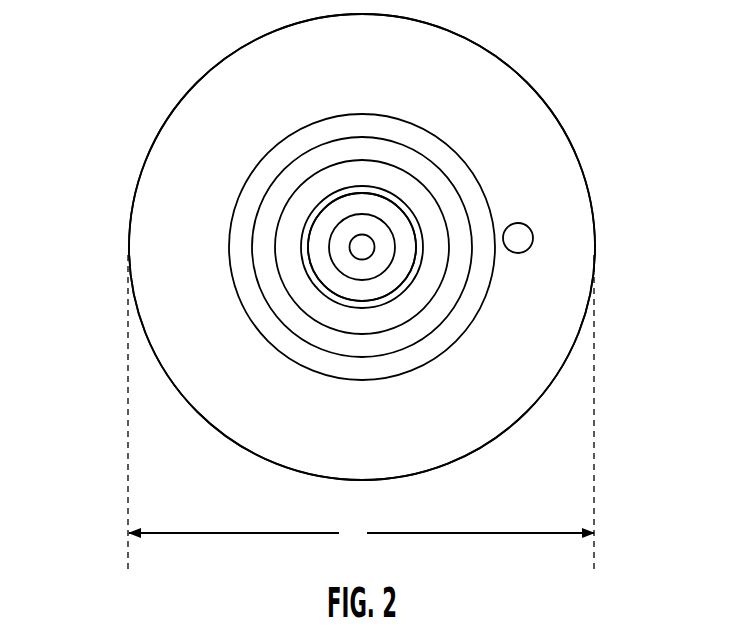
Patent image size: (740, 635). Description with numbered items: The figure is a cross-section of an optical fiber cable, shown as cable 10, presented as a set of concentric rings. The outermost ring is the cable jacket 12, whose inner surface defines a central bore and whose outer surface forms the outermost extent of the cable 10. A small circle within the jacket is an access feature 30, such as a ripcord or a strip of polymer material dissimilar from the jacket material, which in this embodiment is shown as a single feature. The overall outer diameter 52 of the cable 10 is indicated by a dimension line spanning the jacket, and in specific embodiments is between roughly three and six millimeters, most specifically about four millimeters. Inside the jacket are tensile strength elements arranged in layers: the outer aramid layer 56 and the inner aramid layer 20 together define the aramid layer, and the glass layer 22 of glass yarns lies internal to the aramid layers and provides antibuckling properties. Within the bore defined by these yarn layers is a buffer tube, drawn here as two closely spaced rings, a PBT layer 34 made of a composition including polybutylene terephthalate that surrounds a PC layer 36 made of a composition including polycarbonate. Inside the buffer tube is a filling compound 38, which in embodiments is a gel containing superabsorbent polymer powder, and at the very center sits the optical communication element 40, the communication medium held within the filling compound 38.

The cable 10 is at (212, 31).
The cable jacket 12 is at (222, 106).
The outer aramid layer 56 is at (266, 169).
The inner aramid layer 20 is at (264, 217).
The glass layer 22 is at (287, 246).
The PBT layer 34 is at (316, 283).
The PC layer 36 is at (336, 283).
The filling compound 38 is at (354, 277).
The optical communication element 40 is at (369, 245).
The access feature 30 is at (522, 242).
The outer diameter 52 is at (361, 413).